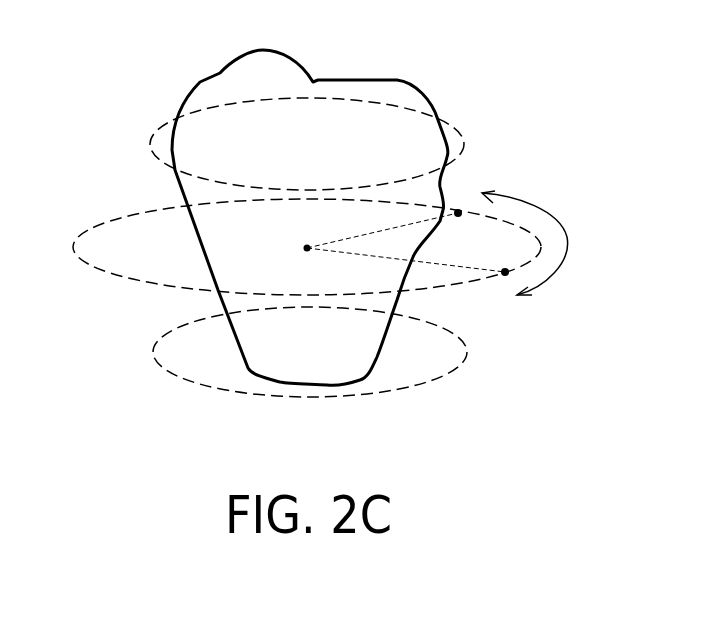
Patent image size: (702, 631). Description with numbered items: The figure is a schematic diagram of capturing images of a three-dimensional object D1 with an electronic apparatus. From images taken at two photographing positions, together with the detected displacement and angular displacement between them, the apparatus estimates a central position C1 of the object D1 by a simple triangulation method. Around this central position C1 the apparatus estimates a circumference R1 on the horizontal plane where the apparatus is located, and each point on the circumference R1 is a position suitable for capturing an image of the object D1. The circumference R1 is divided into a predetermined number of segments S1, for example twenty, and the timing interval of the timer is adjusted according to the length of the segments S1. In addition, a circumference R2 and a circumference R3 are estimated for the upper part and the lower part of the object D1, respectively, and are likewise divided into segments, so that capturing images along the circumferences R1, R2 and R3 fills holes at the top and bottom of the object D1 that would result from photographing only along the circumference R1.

The 3D object D1 is at (368, 78).
The circumference R1 is at (132, 220).
The circumference R2 is at (448, 120).
The circumference R3 is at (440, 377).
The central position C1 is at (300, 249).
The segments S1 is at (543, 243).